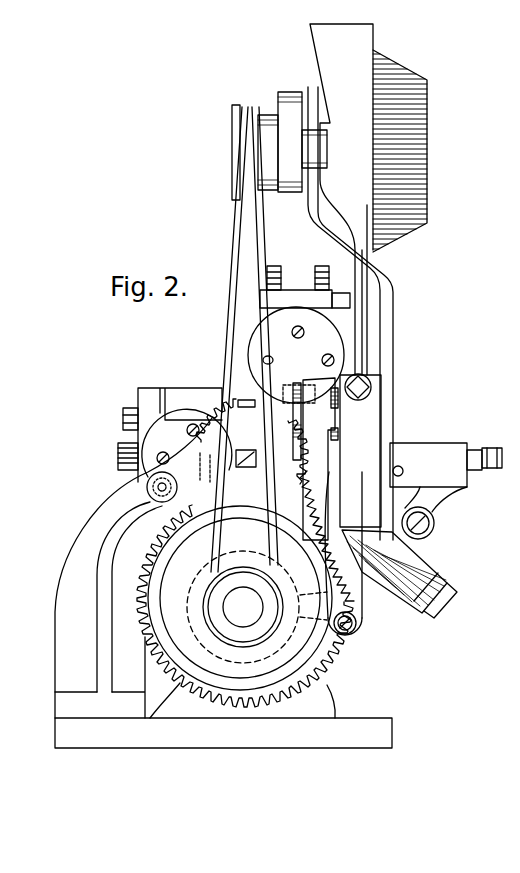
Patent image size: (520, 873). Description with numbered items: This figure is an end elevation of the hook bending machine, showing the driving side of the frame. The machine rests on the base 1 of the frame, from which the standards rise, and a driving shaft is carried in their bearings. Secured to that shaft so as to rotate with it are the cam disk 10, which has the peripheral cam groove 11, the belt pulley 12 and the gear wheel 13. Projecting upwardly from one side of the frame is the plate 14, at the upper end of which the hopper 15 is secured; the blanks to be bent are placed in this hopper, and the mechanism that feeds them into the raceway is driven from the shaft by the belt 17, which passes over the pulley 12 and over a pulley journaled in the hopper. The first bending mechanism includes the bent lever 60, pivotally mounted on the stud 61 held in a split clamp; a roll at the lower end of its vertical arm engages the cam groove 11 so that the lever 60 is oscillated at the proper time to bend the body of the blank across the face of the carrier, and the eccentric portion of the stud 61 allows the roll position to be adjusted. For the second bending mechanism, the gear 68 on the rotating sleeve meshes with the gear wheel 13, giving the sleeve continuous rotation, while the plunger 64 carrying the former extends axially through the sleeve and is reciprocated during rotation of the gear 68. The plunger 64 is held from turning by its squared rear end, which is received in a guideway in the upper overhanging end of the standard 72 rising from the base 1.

The base 1 is at (392, 732).
The cam disk 10 is at (276, 633).
The peripheral cam groove 11 is at (189, 607).
The belt pulley 12 is at (316, 674).
The gear wheel 13 is at (350, 638).
The plate 14 is at (391, 286).
The hopper 15 is at (428, 80).
The belt 17 is at (232, 233).
The bent lever 60 is at (287, 385).
The stud 61 is at (292, 418).
The plunger 64 is at (268, 487).
The gear 68 is at (210, 417).
The standard 72 is at (84, 546).